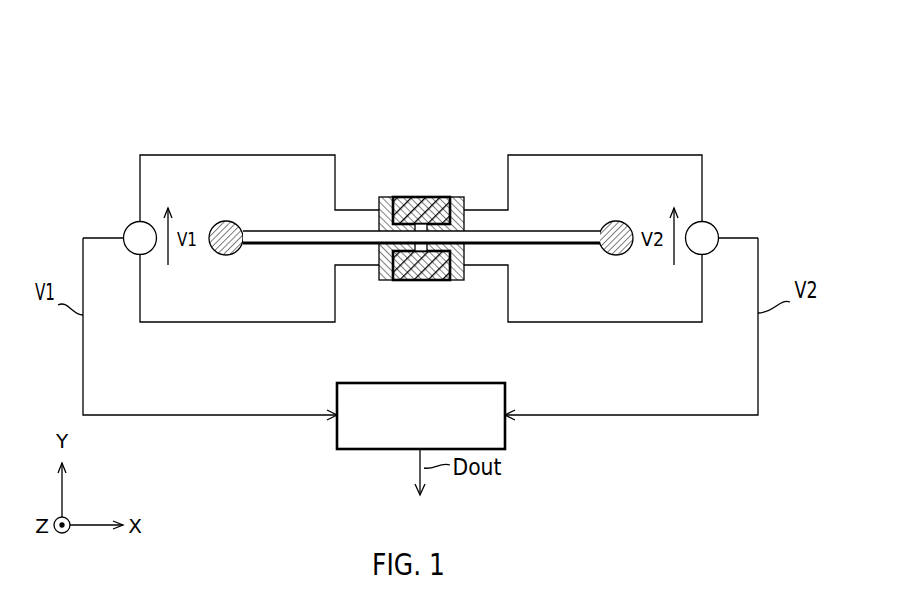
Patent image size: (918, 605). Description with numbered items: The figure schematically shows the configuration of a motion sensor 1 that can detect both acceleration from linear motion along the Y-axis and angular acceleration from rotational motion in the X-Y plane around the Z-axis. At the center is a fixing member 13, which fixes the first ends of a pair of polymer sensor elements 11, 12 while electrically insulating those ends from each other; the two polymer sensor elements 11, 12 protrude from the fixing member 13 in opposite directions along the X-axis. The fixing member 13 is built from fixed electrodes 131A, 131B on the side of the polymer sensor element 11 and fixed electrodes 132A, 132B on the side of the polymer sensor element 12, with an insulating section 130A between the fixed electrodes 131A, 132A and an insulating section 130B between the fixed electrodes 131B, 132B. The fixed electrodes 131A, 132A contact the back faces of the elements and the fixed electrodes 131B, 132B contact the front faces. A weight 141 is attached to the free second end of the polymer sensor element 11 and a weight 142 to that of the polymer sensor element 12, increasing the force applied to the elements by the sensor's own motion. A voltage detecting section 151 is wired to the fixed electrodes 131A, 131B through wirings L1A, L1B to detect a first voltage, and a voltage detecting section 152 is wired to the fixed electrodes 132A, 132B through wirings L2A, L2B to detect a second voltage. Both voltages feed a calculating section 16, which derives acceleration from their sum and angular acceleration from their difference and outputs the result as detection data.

The motion sensor 1 is at (714, 60).
The polymer sensor element 11 is at (291, 240).
The polymer sensor element 12 is at (552, 238).
The fixing member 13 is at (421, 196).
The insulating section 130A is at (422, 280).
The insulating section 130B is at (422, 197).
The fixed electrode 131A is at (384, 280).
The fixed electrode 131B is at (384, 197).
The fixed electrode 132A is at (455, 280).
The fixed electrode 132B is at (455, 197).
The weight 141 is at (232, 223).
The weight 142 is at (608, 223).
The voltage detecting section 151 is at (128, 226).
The voltage detecting section 152 is at (716, 223).
The calculating section 16 is at (508, 400).
The wiring L1A is at (167, 322).
The wiring L1B is at (167, 155).
The wiring L2A is at (676, 322).
The wiring L2B is at (676, 155).